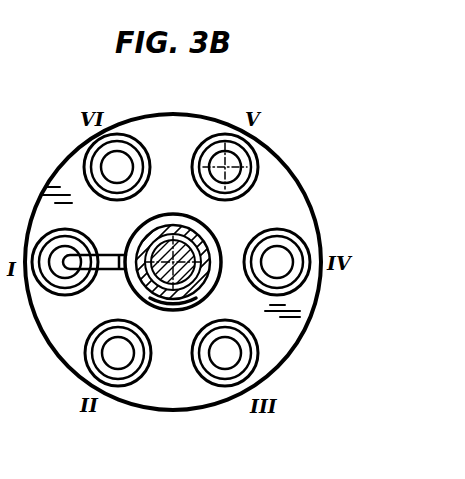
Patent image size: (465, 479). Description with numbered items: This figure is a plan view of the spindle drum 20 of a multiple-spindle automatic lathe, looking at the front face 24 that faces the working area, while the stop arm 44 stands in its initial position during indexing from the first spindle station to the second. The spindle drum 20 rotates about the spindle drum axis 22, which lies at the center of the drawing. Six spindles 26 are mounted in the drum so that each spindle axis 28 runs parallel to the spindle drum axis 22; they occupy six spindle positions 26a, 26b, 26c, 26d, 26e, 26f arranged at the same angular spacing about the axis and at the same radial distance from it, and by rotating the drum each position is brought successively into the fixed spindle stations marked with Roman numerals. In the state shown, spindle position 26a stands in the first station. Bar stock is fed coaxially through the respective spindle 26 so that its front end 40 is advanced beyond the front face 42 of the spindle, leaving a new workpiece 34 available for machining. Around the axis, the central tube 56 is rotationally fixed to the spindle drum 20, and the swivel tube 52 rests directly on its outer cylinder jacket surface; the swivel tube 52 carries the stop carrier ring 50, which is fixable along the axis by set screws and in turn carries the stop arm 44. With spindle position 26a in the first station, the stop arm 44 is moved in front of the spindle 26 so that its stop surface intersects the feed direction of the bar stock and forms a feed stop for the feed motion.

The spindle drum 20 is at (280, 126).
The spindle drum axis 22 is at (188, 240).
The front face 24 is at (293, 203).
The spindles 26 is at (92, 136).
The spindle position 26a is at (63, 264).
The spindle position 26b is at (96, 369).
The spindle position 26c is at (252, 353).
The spindle position 26d is at (289, 292).
The spindle position 26e is at (209, 145).
The spindle position 26f is at (114, 137).
The spindle axis 28 is at (208, 195).
The workpiece 34 is at (80, 283).
The front end 40 is at (63, 290).
The front face 42 is at (209, 159).
The stop arm 44 is at (108, 254).
The stop carrier ring 50 is at (211, 260).
The swivel tube 52 is at (170, 310).
The central tube 56 is at (205, 288).